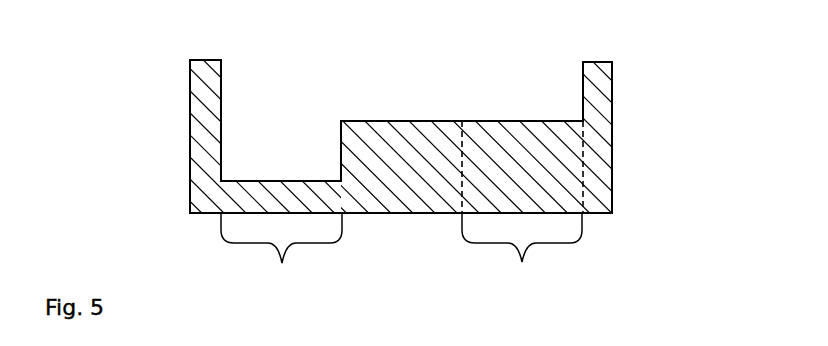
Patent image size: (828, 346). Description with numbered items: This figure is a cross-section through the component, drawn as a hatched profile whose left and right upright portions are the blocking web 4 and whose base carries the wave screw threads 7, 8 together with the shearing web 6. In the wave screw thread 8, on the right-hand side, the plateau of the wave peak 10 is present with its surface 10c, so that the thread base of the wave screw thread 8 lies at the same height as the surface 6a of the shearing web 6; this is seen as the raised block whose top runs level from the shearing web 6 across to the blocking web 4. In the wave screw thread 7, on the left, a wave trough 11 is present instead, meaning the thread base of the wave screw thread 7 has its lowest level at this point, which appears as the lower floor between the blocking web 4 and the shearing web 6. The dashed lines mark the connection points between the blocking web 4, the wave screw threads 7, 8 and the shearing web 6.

The blocking web 4 is at (712, 39).
The shearing web 6 is at (383, 165).
The surface of the shearing web 6a is at (432, 121).
The wave screw thread 7 is at (281, 251).
The wave screw thread 8 is at (522, 252).
The wave peak 10 is at (557, 173).
The surface of the wave peak 10c is at (532, 121).
The wave trough 11 is at (233, 181).